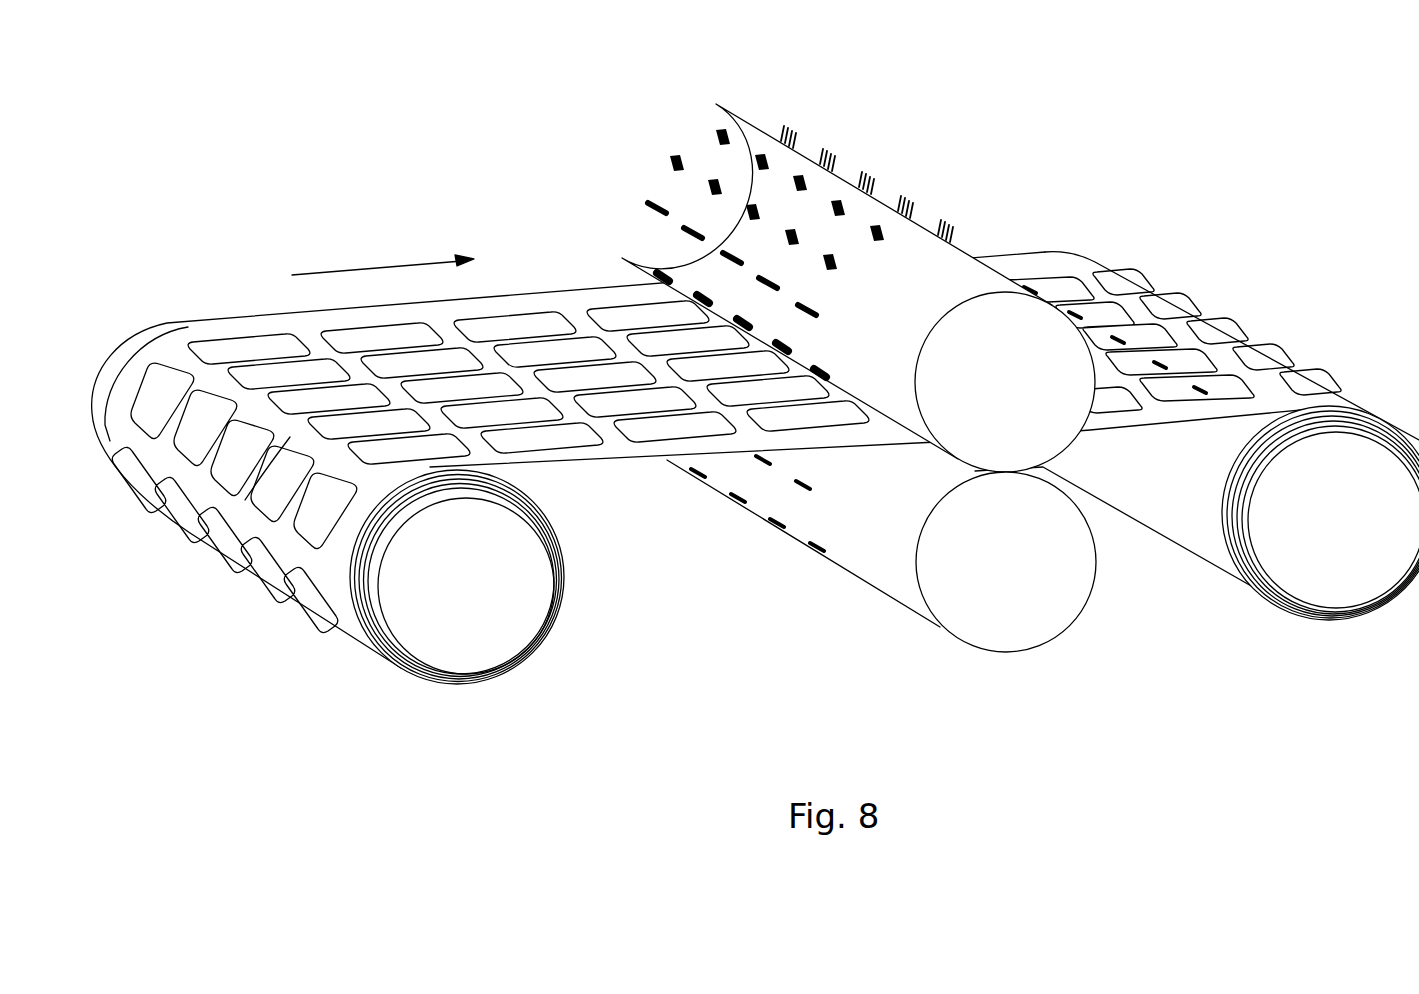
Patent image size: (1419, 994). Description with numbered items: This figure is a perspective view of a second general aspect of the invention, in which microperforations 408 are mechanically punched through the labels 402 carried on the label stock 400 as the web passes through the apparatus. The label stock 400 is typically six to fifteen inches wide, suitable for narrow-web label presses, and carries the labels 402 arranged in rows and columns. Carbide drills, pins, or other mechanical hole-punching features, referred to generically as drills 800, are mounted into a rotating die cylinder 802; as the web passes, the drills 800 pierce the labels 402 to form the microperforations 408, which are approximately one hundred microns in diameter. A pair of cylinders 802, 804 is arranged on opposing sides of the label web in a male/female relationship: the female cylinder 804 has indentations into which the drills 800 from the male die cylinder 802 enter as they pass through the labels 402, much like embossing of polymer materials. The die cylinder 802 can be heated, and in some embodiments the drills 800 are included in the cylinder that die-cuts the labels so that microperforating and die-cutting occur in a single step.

The label stock 400 is at (258, 316).
The labels 402 is at (546, 315).
The microperforations 408 is at (1141, 280).
The drills 800 is at (788, 131).
The die cylinder 802 is at (1005, 382).
The female cylinder 804 is at (1006, 562).